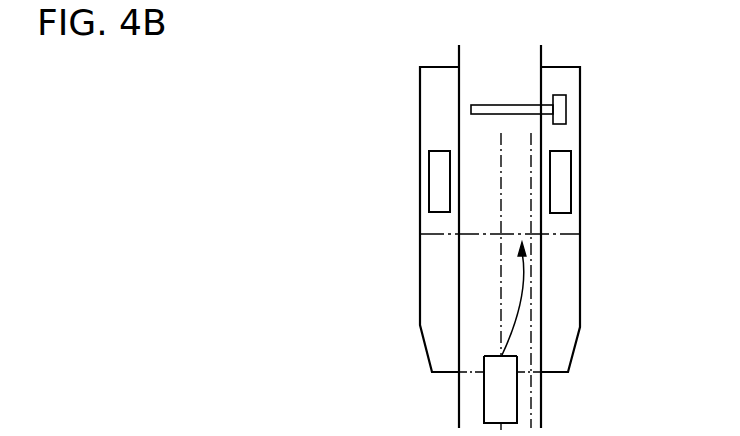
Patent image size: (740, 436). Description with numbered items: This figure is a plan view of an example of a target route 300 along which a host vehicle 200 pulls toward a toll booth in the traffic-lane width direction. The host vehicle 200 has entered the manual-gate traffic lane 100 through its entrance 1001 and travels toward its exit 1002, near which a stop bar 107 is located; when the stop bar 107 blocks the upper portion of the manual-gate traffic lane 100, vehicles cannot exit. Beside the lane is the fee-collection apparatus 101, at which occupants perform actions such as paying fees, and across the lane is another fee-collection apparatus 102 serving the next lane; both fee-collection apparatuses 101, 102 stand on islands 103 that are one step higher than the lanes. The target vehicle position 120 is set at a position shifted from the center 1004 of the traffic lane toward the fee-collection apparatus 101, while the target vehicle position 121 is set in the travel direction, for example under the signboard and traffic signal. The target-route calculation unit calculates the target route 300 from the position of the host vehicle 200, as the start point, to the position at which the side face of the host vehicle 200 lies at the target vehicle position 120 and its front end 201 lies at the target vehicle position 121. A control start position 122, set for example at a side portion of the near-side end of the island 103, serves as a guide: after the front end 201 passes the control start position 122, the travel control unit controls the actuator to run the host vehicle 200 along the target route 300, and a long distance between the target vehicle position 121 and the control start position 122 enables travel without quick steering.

The manual-gate traffic lane 100 is at (459, 418).
The fee-collection apparatus 101 is at (563, 183).
The fee-collection apparatus 102 is at (437, 185).
The island 103 is at (573, 142).
The stop bar 107 is at (515, 105).
The target vehicle position 120 is at (532, 253).
The target vehicle position 121 is at (440, 236).
The control start position 122 is at (466, 375).
The host vehicle 200 is at (510, 388).
The front end 201 is at (495, 355).
The target route 300 is at (522, 278).
The entrance 1001 is at (523, 418).
The exit 1002 is at (481, 55).
The center of the traffic lane 1004 is at (500, 287).